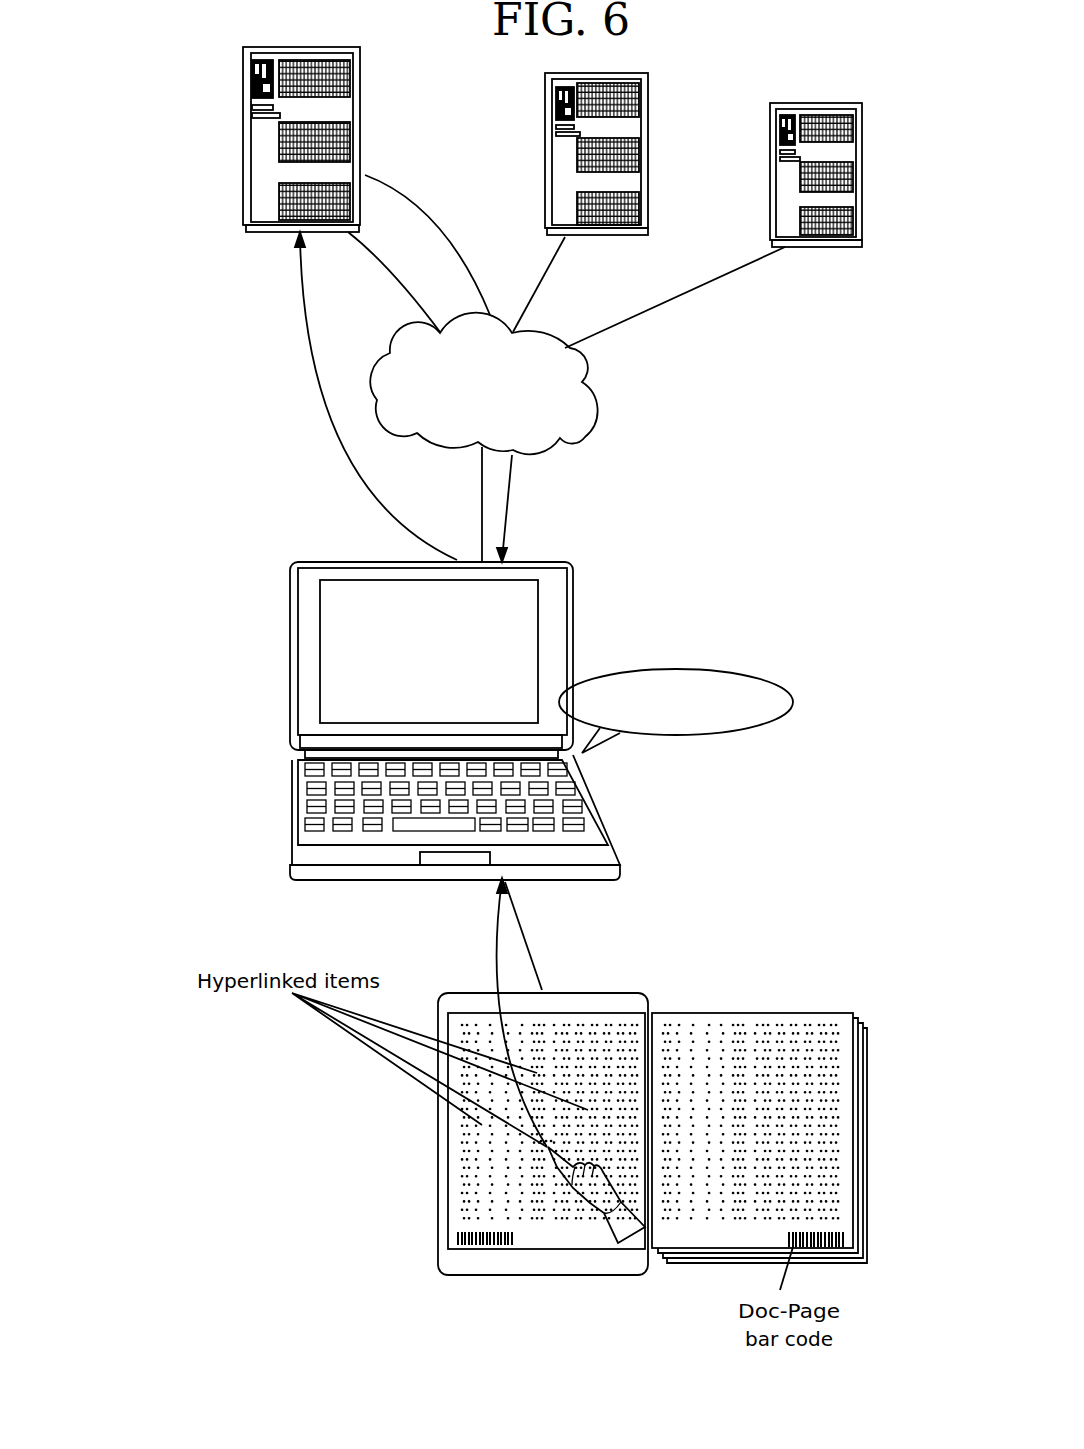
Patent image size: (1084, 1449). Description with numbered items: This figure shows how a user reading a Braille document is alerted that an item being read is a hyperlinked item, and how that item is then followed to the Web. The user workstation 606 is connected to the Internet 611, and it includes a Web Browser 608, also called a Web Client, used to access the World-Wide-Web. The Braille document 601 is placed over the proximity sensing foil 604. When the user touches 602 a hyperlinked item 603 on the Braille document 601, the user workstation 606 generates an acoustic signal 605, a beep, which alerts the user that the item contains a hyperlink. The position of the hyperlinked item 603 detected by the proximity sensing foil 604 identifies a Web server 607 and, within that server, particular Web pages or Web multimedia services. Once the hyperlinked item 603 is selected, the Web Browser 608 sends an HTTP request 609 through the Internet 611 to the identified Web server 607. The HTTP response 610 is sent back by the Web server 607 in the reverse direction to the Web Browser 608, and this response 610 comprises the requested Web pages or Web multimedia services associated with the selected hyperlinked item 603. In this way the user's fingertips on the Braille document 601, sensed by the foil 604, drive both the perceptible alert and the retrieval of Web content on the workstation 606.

The Braille document 601 is at (735, 1020).
The touch by the user 602 is at (547, 1150).
The hyperlinked item 603 is at (547, 1147).
The proximity sensing foil 604 is at (463, 1262).
The acoustic signal 605 is at (688, 667).
The user workstation 606 is at (292, 641).
The Web server 607 is at (355, 150).
The Web Browser 608 is at (429, 651).
The HTTP request 609 is at (306, 338).
The HTTP response 610 is at (509, 503).
The Internet 611 is at (483, 384).